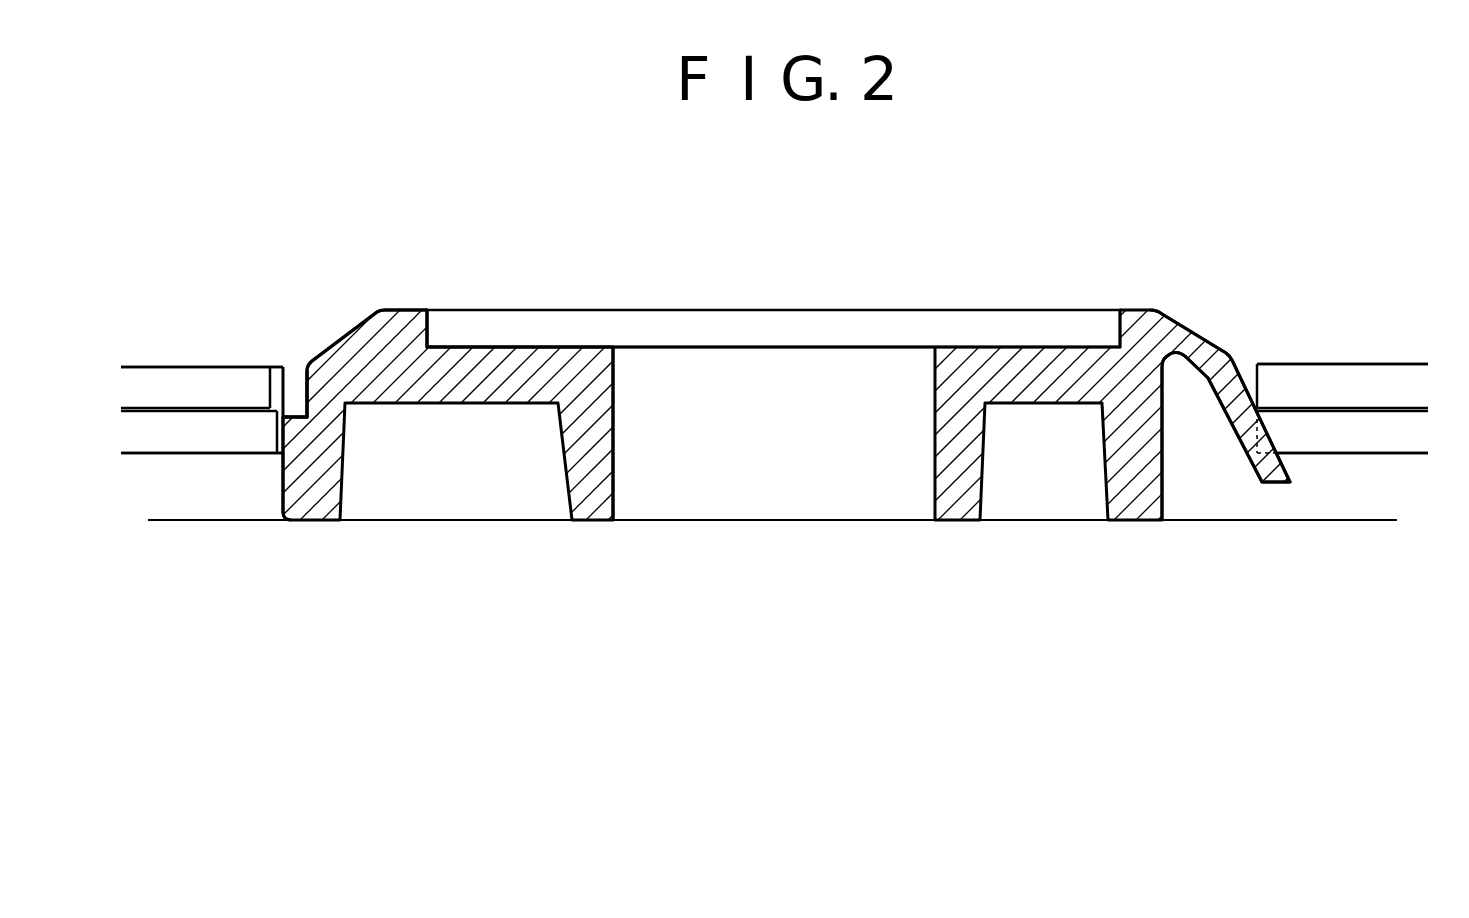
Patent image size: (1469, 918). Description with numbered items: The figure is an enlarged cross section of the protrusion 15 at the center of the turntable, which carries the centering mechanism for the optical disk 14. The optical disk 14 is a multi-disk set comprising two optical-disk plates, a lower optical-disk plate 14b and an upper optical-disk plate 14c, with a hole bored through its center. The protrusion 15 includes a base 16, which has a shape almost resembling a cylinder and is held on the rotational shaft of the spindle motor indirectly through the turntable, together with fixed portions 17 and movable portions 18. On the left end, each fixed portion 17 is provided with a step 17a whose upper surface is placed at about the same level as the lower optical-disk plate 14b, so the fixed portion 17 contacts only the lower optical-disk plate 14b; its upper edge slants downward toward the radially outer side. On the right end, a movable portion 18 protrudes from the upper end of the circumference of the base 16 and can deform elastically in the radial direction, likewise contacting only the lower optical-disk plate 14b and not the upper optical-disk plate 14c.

The optical disk 14 is at (228, 350).
The lower optical-disk plate 14b is at (193, 432).
The upper optical-disk plate 14c is at (149, 382).
The protrusion 15 is at (1156, 261).
The base 16 is at (522, 355).
The fixed portion 17 is at (315, 492).
The step 17a is at (296, 413).
The movable portion 18 is at (1228, 358).